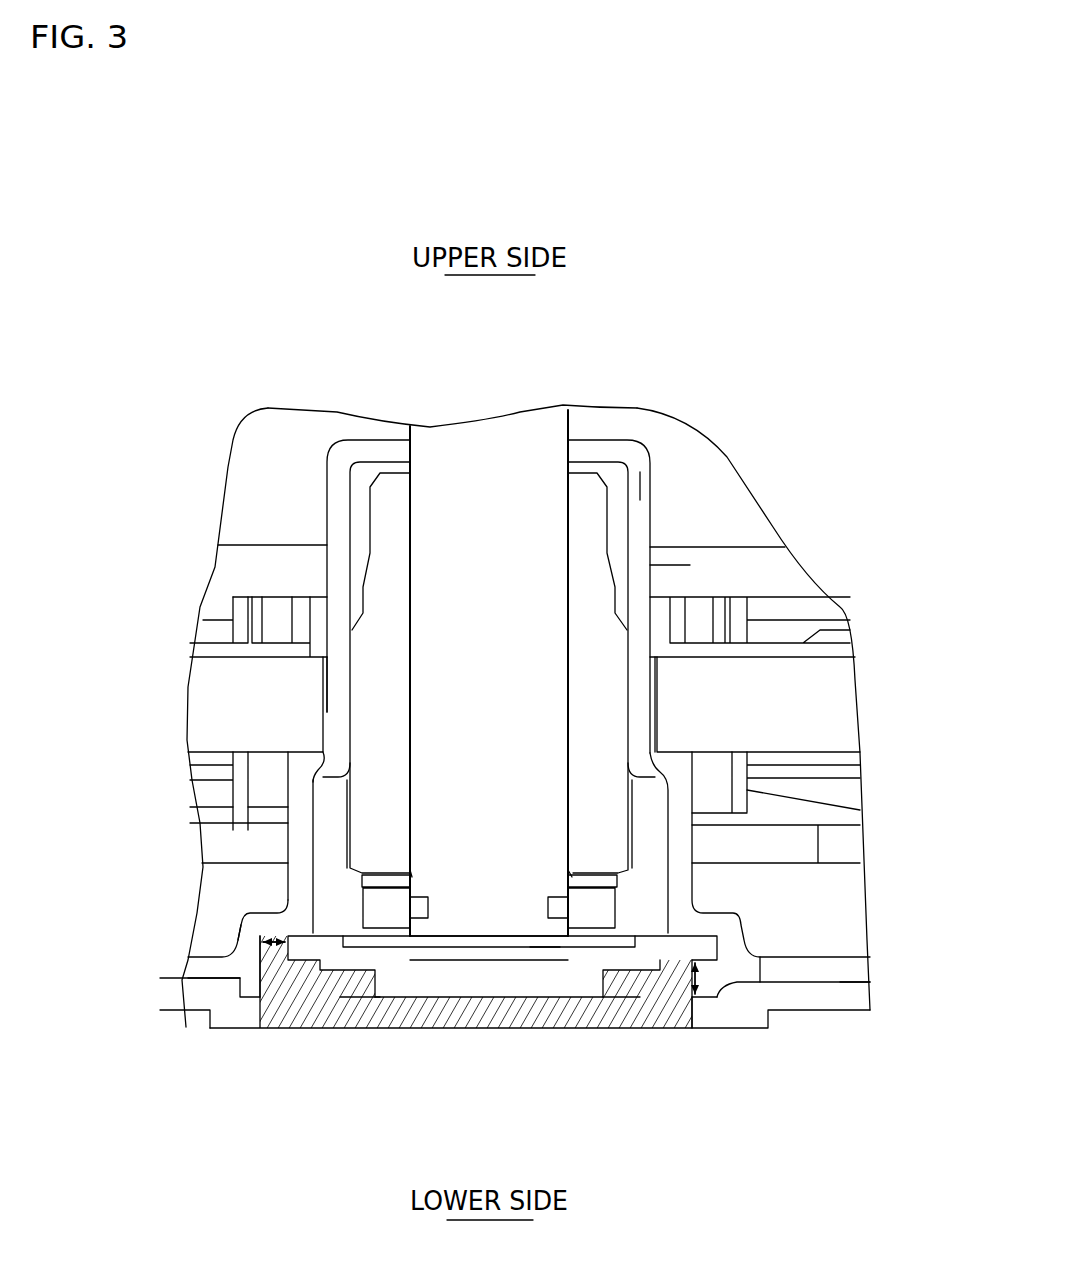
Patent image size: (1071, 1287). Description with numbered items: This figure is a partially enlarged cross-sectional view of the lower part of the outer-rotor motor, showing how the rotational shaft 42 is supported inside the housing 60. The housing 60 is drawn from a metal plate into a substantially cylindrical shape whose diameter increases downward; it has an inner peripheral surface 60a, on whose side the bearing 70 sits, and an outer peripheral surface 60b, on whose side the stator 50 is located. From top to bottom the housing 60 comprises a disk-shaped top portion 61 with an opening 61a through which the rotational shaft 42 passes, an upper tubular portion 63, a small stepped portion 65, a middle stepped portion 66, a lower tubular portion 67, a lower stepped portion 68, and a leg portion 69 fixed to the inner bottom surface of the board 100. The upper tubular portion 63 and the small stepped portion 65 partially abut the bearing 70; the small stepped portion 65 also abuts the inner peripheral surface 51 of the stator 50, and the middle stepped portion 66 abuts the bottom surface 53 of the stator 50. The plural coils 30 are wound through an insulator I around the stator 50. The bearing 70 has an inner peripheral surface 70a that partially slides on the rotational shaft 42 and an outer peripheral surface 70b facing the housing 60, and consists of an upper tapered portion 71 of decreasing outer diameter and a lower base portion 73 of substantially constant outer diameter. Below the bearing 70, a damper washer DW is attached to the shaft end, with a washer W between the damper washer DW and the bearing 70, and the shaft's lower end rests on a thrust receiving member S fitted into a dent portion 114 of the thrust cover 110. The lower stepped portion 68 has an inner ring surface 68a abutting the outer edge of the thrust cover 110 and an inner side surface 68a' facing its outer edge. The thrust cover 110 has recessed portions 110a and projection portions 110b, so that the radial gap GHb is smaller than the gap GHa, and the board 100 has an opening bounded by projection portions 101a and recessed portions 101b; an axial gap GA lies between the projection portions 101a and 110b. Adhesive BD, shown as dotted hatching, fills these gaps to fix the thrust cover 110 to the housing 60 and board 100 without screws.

The rotational shaft 42 is at (482, 442).
The housing 60 is at (205, 1005).
The inner peripheral surface 60a is at (352, 633).
The outer peripheral surface 60b is at (690, 565).
The top portion 61 is at (602, 450).
The opening 61a is at (567, 455).
The upper tubular portion 63 is at (642, 485).
The small stepped portion 65 is at (640, 722).
The middle stepped portion 66 is at (323, 770).
The lower tubular portion 67 is at (298, 887).
The lower stepped portion 68 is at (712, 960).
The inner ring surface 68a is at (818, 942).
The inner side surface 68a' is at (211, 1062).
The leg portion 69 is at (202, 1000).
The bearing 70 is at (270, 913).
The inner peripheral surface 70a is at (411, 519).
The outer peripheral surface 70b is at (365, 588).
The tapered portion 71 is at (392, 543).
The base portion 73 is at (383, 797).
The stator 50 is at (226, 695).
The inner peripheral surface 51 is at (650, 716).
The bottom surface 53 is at (230, 769).
The coils 30 is at (840, 772).
The insulator I is at (277, 620).
The board 100 is at (750, 1033).
The projection portions 101a is at (693, 1000).
The recessed portions 101b is at (262, 997).
The thrust cover 110 is at (603, 1000).
The recessed portions 110a is at (274, 952).
The projection portions 110b is at (780, 990).
The dent portion 114 is at (398, 960).
The thrust receiving member S is at (488, 967).
The washer W is at (537, 905).
The damper washer DW is at (582, 1000).
The gap GA is at (666, 1030).
The adhesive BD is at (360, 1033).
The gap GHa is at (200, 990).
The gap GHb is at (862, 1020).